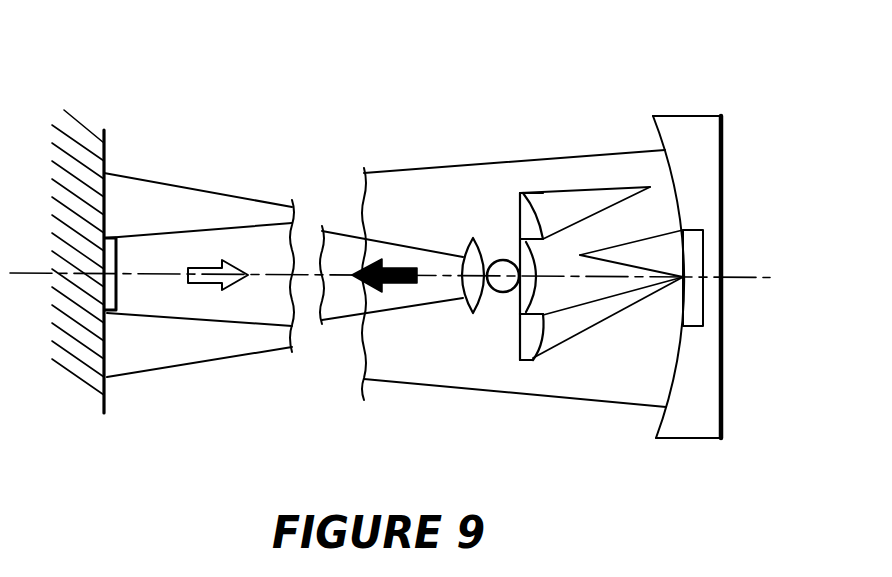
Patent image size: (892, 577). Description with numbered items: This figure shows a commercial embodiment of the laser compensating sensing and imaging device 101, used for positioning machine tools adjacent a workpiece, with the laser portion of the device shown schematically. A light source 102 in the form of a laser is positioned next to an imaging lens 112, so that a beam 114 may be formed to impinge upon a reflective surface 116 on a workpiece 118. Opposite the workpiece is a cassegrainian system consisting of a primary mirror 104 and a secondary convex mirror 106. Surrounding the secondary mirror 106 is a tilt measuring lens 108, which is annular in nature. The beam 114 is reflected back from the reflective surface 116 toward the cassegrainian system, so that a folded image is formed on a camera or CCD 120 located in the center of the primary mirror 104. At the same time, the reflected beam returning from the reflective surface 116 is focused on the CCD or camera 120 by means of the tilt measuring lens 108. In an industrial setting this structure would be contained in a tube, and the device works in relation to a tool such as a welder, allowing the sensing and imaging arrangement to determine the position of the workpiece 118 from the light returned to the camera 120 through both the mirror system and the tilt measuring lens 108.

The optical system 101 is at (413, 105).
The light source 102 is at (497, 258).
The primary mirror 104 is at (707, 148).
The secondary mirror 106 is at (543, 238).
The tilt measuring lens 108 is at (533, 330).
The imaging lens 112 is at (473, 305).
The beam 114 is at (342, 312).
The reflective surface 116 is at (118, 257).
The workpiece 118 is at (107, 350).
The camera or CCD 120 is at (693, 262).